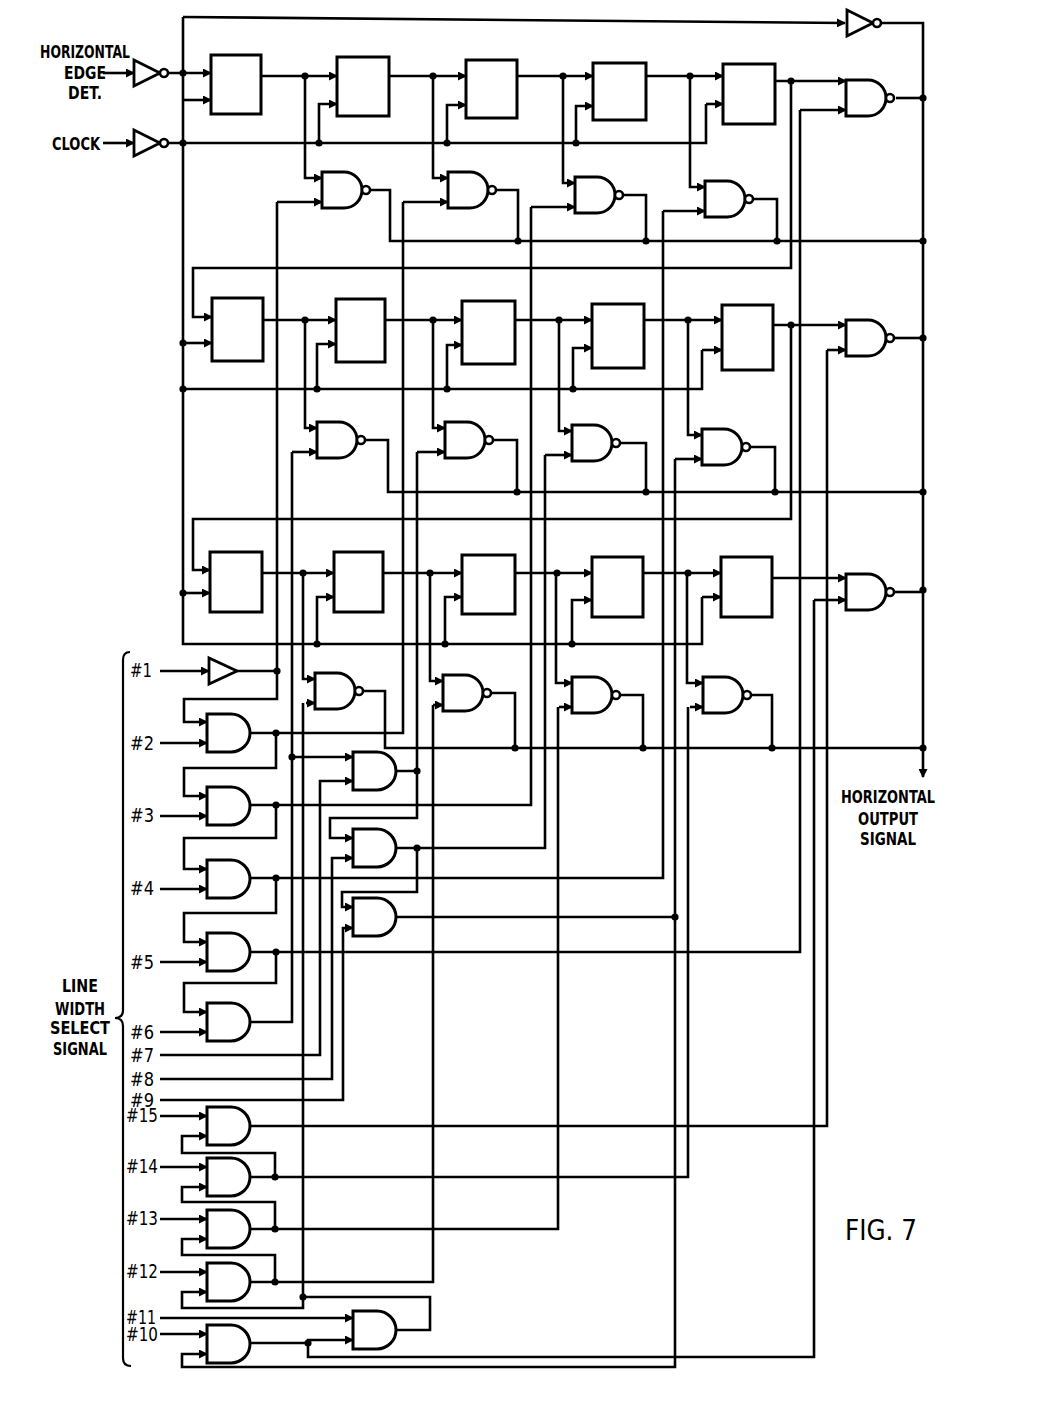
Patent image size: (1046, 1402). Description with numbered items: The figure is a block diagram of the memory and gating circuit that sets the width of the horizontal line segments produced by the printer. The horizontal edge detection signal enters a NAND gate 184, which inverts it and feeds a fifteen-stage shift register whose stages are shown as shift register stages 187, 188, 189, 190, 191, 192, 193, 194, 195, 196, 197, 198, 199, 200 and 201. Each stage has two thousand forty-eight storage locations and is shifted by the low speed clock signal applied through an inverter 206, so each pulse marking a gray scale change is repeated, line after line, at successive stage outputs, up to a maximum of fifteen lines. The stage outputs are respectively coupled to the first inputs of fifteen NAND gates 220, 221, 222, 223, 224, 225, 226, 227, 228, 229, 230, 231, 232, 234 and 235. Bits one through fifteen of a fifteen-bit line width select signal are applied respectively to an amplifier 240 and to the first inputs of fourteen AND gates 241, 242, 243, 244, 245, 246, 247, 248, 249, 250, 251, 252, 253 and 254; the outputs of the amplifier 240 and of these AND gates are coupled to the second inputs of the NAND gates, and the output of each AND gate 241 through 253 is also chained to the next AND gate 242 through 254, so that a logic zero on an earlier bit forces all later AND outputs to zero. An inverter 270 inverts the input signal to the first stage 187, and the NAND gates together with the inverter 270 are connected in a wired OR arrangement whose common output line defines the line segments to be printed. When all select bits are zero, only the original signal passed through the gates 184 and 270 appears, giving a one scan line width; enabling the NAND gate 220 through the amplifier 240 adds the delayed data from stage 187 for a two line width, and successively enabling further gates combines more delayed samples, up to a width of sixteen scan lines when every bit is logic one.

The NAND gate 184 is at (150, 64).
The inverter 206 is at (150, 132).
The shift register stage 187 is at (257, 56).
The shift register stage 188 is at (386, 58).
The shift register stage 189 is at (502, 60).
The shift register stage 190 is at (634, 63).
The shift register stage 191 is at (764, 64).
The shift register stage 192 is at (237, 290).
The shift register stage 193 is at (367, 290).
The shift register stage 194 is at (492, 290).
The shift register stage 195 is at (624, 290).
The shift register stage 196 is at (754, 290).
The shift register stage 197 is at (239, 541).
The shift register stage 198 is at (366, 541).
The shift register stage 199 is at (493, 556).
The shift register stage 200 is at (620, 558).
The shift register stage 201 is at (751, 558).
The NAND gate 220 is at (357, 172).
The NAND gate 221 is at (483, 172).
The NAND gate 222 is at (606, 177).
The NAND gate 223 is at (735, 181).
The NAND gate 224 is at (866, 117).
The NAND gate 225 is at (345, 408).
The NAND gate 226 is at (473, 408).
The NAND gate 227 is at (600, 425).
The NAND gate 228 is at (729, 429).
The NAND gate 229 is at (870, 320).
The NAND gate 230 is at (350, 673).
The NAND gate 231 is at (476, 675).
The NAND gate 232 is at (602, 677).
The NAND gate 234 is at (732, 677).
The NAND gate 235 is at (870, 574).
The inverter 270 is at (864, 33).
The amplifier 240 is at (232, 666).
The AND gate 241 is at (240, 718).
The AND gate 242 is at (239, 790).
The AND gate 243 is at (239, 862).
The AND gate 244 is at (239, 935).
The AND gate 245 is at (239, 1005).
The AND gate 246 is at (358, 752).
The AND gate 247 is at (388, 834).
The AND gate 248 is at (380, 936).
The AND gate 249 is at (252, 1354).
The AND gate 250 is at (394, 1340).
The AND gate 251 is at (246, 1292).
The AND gate 252 is at (246, 1240).
The AND gate 253 is at (246, 1188).
The AND gate 254 is at (252, 1117).